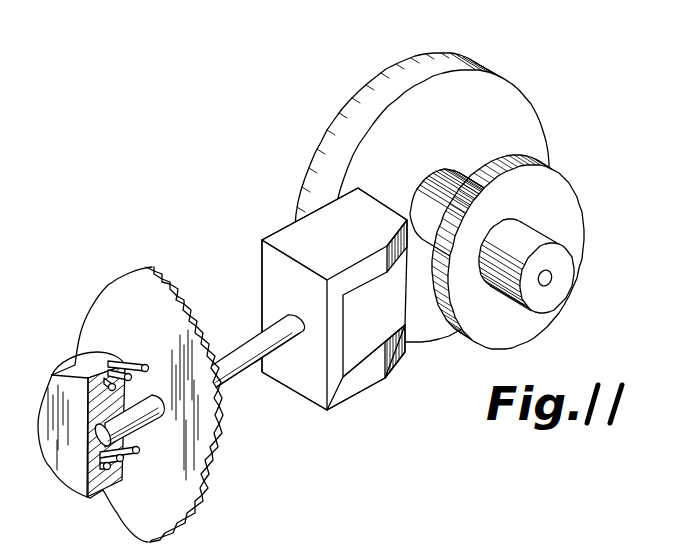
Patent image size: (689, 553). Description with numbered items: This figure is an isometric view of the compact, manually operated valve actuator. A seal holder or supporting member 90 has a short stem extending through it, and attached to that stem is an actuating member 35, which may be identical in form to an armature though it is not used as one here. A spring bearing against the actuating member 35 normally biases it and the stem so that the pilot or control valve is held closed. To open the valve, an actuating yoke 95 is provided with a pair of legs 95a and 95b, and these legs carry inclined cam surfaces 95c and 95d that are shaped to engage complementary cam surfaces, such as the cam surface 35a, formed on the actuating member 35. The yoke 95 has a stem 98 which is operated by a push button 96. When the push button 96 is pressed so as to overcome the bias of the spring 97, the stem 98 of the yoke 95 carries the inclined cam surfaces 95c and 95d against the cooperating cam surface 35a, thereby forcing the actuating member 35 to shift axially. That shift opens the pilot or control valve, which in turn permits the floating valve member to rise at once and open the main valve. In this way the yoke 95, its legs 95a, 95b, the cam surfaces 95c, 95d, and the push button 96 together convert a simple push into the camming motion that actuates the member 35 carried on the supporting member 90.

The supporting member 90 is at (470, 65).
The actuating member 35 is at (562, 188).
The cam surface 35a is at (500, 167).
The actuating yoke 95 is at (333, 291).
The leg 95a is at (295, 235).
The leg 95b is at (367, 380).
The inclined cam surface 95c is at (400, 358).
The inclined cam surface 95d is at (398, 226).
The push button 96 is at (56, 380).
The spring 97 is at (138, 361).
The stem 98 is at (252, 338).